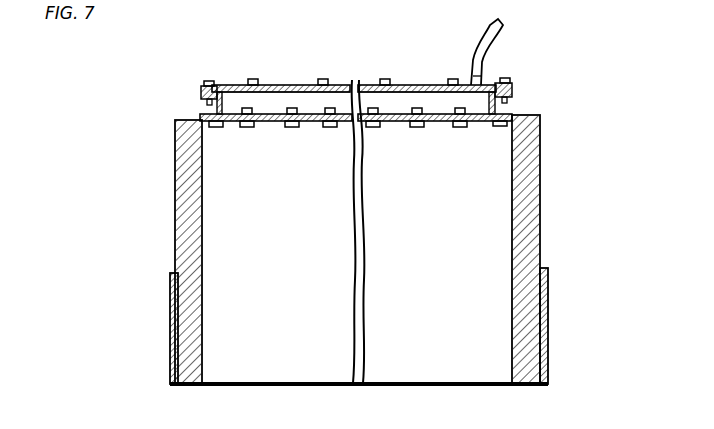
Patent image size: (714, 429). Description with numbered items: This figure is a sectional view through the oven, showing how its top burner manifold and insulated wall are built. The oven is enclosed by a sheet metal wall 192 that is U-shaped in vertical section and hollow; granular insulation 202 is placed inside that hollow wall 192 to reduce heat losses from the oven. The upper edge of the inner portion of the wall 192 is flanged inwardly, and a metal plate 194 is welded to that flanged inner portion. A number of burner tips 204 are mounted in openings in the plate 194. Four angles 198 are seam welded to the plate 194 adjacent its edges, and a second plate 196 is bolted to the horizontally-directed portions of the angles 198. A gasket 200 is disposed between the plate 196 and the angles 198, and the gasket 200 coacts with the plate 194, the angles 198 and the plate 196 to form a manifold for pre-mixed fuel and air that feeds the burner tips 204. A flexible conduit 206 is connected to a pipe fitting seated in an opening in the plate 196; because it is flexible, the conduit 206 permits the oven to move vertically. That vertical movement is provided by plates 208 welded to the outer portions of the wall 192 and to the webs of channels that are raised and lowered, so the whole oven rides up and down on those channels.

The sheet metal wall 192 is at (173, 198).
The plate 194 is at (274, 128).
The plate 196 is at (285, 84).
The angles 198 is at (208, 108).
The gasket 200 is at (409, 94).
The granular insulation 202 is at (198, 255).
The burner tips 204 is at (457, 128).
The flexible conduit 206 is at (498, 36).
The plates 208 is at (171, 318).